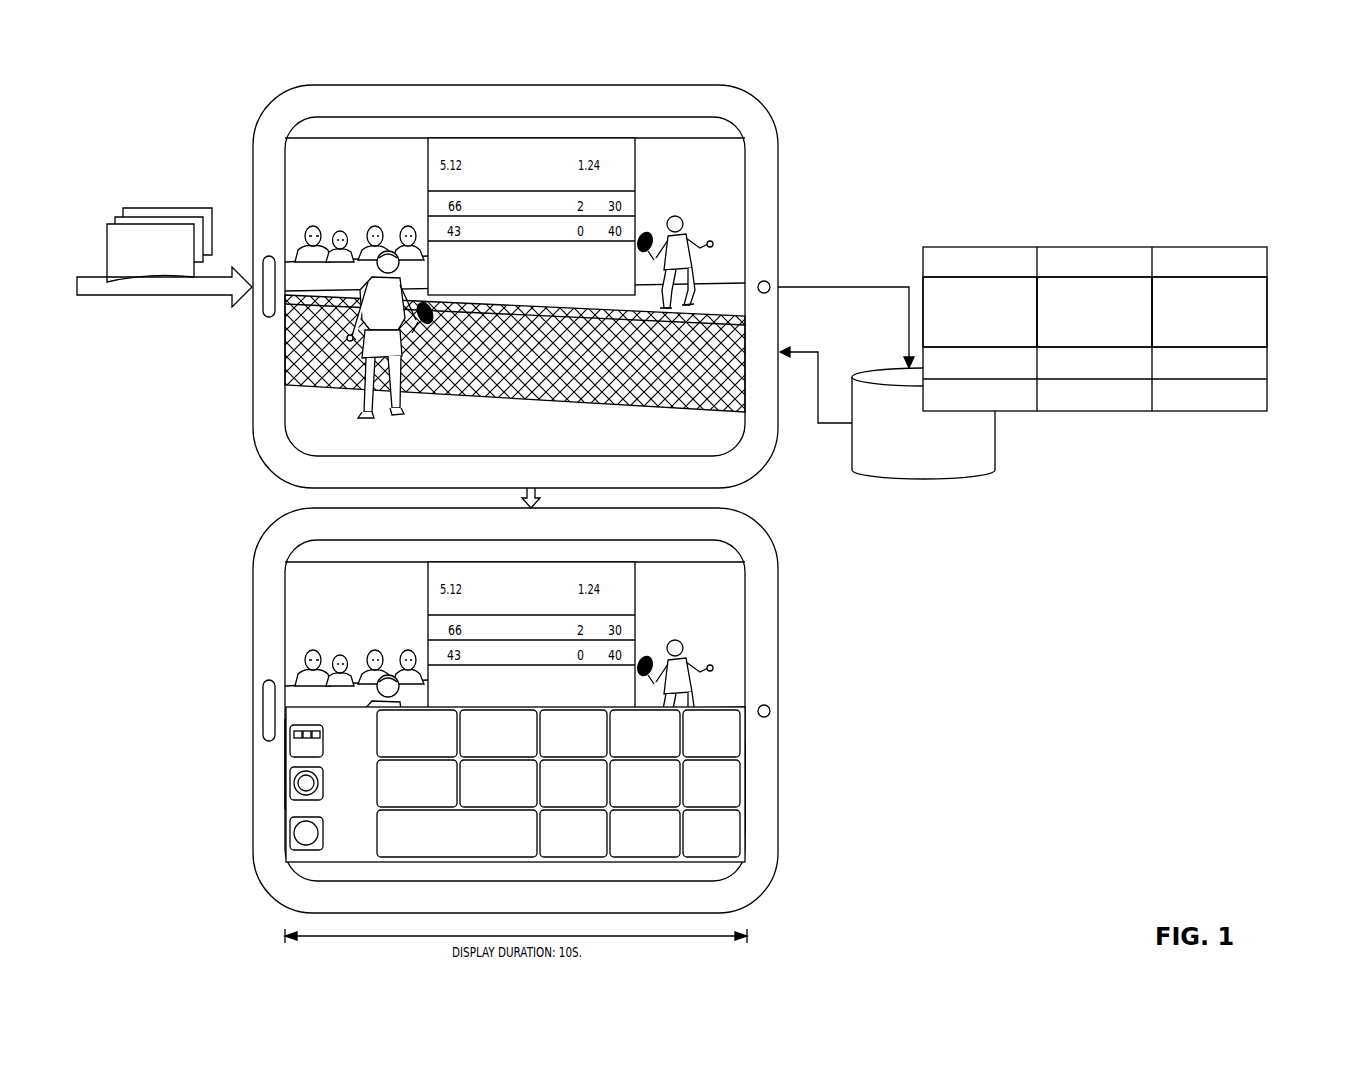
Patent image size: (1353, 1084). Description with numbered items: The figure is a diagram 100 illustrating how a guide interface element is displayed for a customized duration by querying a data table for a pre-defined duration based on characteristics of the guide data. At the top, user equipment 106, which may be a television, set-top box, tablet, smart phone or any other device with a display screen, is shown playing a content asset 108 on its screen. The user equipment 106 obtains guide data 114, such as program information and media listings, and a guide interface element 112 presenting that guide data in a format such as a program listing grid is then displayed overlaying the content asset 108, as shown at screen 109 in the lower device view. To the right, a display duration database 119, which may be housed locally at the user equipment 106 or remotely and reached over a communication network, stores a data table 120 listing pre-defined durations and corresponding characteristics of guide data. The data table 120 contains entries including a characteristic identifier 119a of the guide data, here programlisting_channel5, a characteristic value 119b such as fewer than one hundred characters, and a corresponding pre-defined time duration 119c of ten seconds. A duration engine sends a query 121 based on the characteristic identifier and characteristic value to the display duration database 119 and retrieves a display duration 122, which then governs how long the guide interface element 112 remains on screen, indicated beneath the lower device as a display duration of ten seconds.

The diagram 100 is at (775, 64).
The user equipment 106 is at (365, 85).
The content asset 108 is at (720, 175).
The screen 109 is at (765, 662).
The guide interface element 112 is at (747, 788).
The guide data 114 is at (138, 223).
The display duration database 119 is at (920, 478).
The characteristic identifier 119a is at (1012, 333).
The characteristic value 119b is at (1117, 332).
The pre-defined time duration 119c is at (1255, 322).
The data table 120 is at (1125, 335).
The query 121 is at (843, 173).
The display duration 122 is at (814, 493).